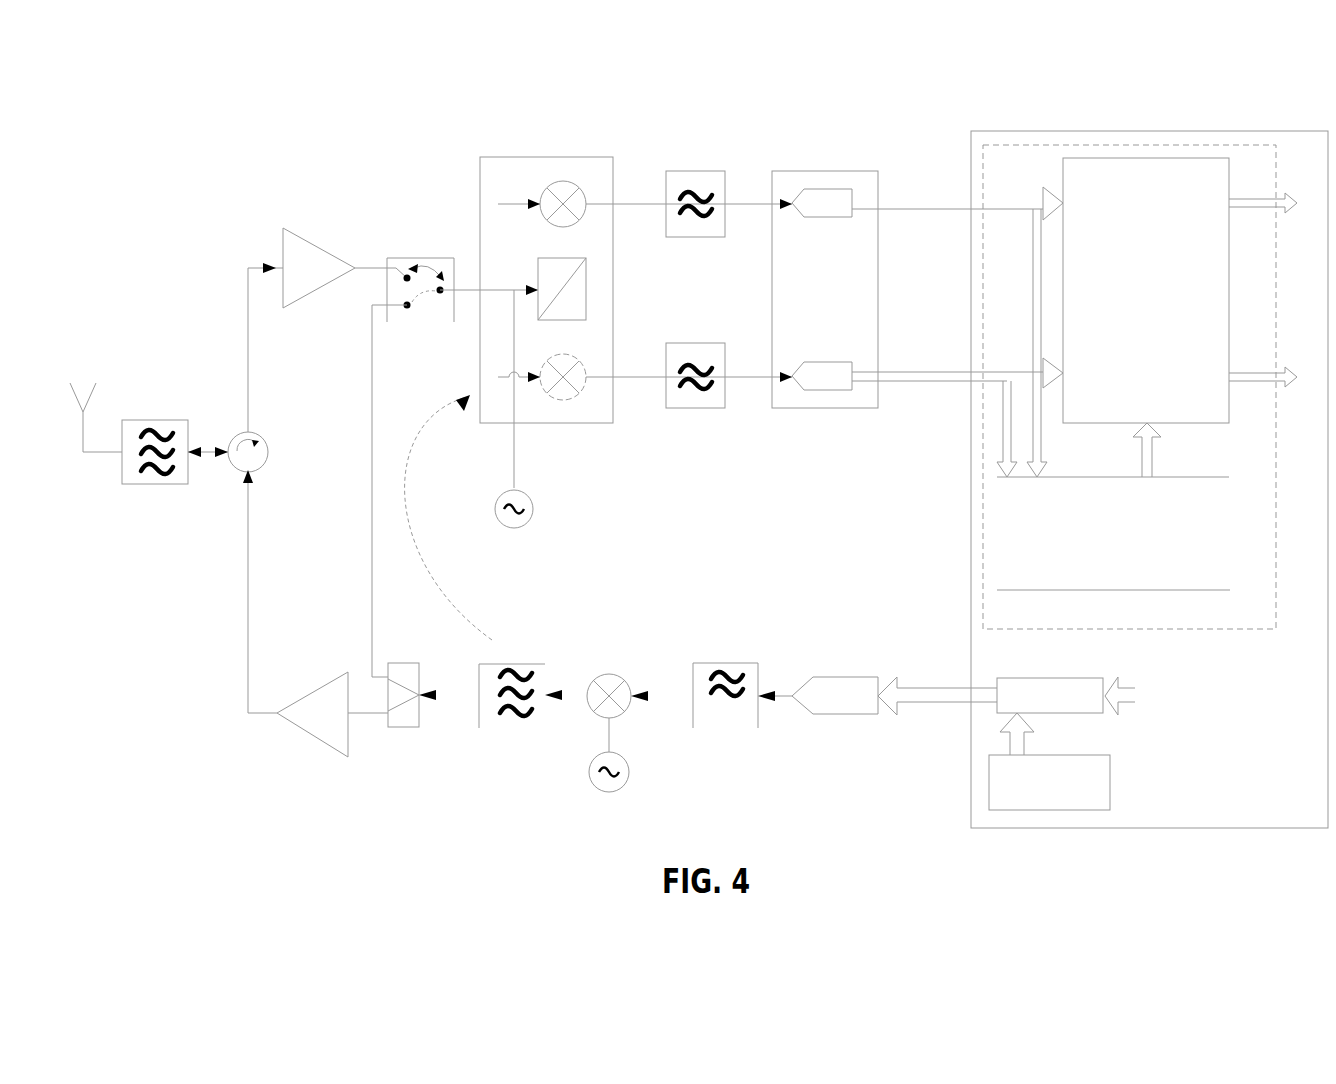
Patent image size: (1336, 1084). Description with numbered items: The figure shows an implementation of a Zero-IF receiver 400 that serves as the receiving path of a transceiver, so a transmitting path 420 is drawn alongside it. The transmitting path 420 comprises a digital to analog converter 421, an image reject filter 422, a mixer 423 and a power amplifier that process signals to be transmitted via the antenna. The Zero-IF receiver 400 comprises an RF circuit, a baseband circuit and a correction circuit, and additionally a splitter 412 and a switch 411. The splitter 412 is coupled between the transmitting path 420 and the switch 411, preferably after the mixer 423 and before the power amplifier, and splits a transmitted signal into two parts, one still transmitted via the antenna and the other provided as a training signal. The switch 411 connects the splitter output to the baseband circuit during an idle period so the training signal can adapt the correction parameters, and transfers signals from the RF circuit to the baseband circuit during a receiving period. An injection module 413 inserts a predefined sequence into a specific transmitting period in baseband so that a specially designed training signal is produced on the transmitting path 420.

The Zero-IF receiver 400 is at (699, 489).
The switch 411 is at (412, 258).
The splitter 412 is at (412, 663).
The injection module 413 is at (1058, 678).
The transmitting path 420 is at (677, 741).
The digital to analog converter 421 is at (848, 677).
The image reject filter 422 is at (736, 663).
The mixer 423 is at (618, 642).